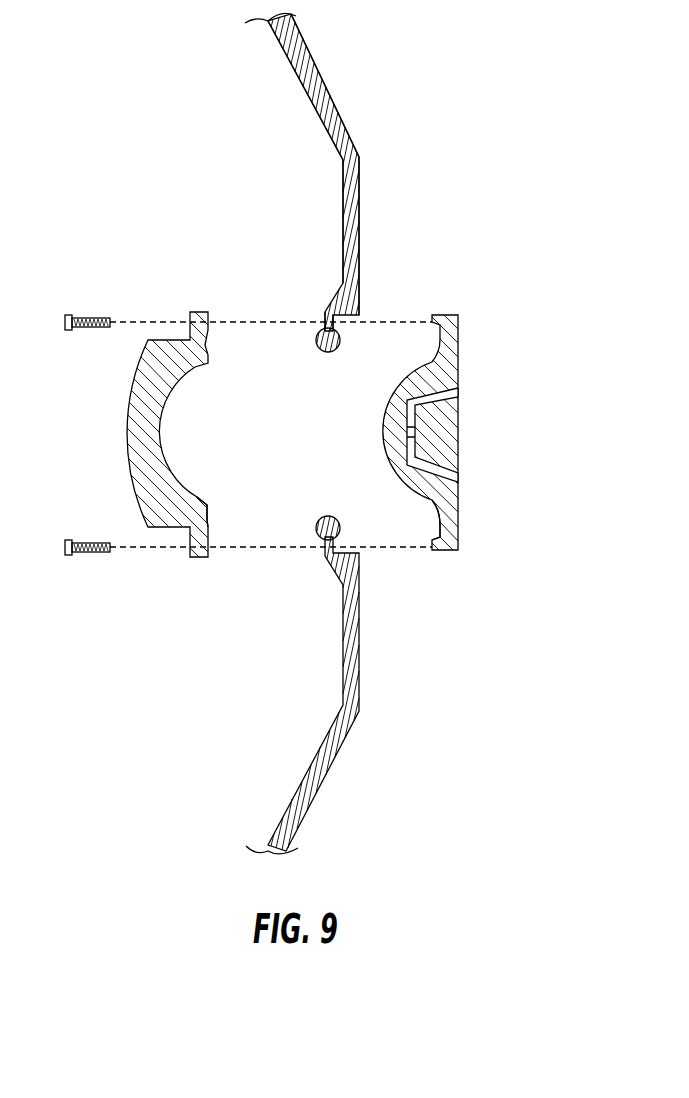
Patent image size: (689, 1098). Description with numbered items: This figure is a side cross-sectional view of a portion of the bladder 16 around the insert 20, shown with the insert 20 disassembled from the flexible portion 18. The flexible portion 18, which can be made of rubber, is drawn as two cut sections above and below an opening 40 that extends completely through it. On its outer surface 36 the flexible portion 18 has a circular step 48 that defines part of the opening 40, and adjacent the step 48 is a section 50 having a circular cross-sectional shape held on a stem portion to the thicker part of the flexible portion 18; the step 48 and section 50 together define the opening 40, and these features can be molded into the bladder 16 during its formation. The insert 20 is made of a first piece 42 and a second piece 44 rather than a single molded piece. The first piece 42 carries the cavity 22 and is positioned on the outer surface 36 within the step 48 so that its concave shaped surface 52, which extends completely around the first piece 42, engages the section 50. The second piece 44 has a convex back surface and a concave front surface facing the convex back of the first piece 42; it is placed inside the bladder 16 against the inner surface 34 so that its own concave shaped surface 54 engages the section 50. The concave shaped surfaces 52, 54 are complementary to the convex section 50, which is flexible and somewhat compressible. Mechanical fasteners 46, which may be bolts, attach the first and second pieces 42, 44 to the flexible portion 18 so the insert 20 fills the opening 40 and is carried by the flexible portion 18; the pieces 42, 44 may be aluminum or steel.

The bladder 16 is at (302, 55).
The flexible portion 18 is at (360, 230).
The insert 20 is at (463, 400).
The cavity 22 is at (458, 482).
The inner surface 34 is at (305, 118).
The outer surface 36 is at (355, 118).
The opening 40 is at (300, 446).
The first piece 42 is at (458, 348).
The second piece 44 is at (128, 432).
The mechanical fasteners 46 is at (66, 316).
The step 48 is at (337, 329).
The section 50 is at (318, 348).
The concave shaped surface 52 is at (422, 527).
The concave shaped surface 54 is at (218, 527).